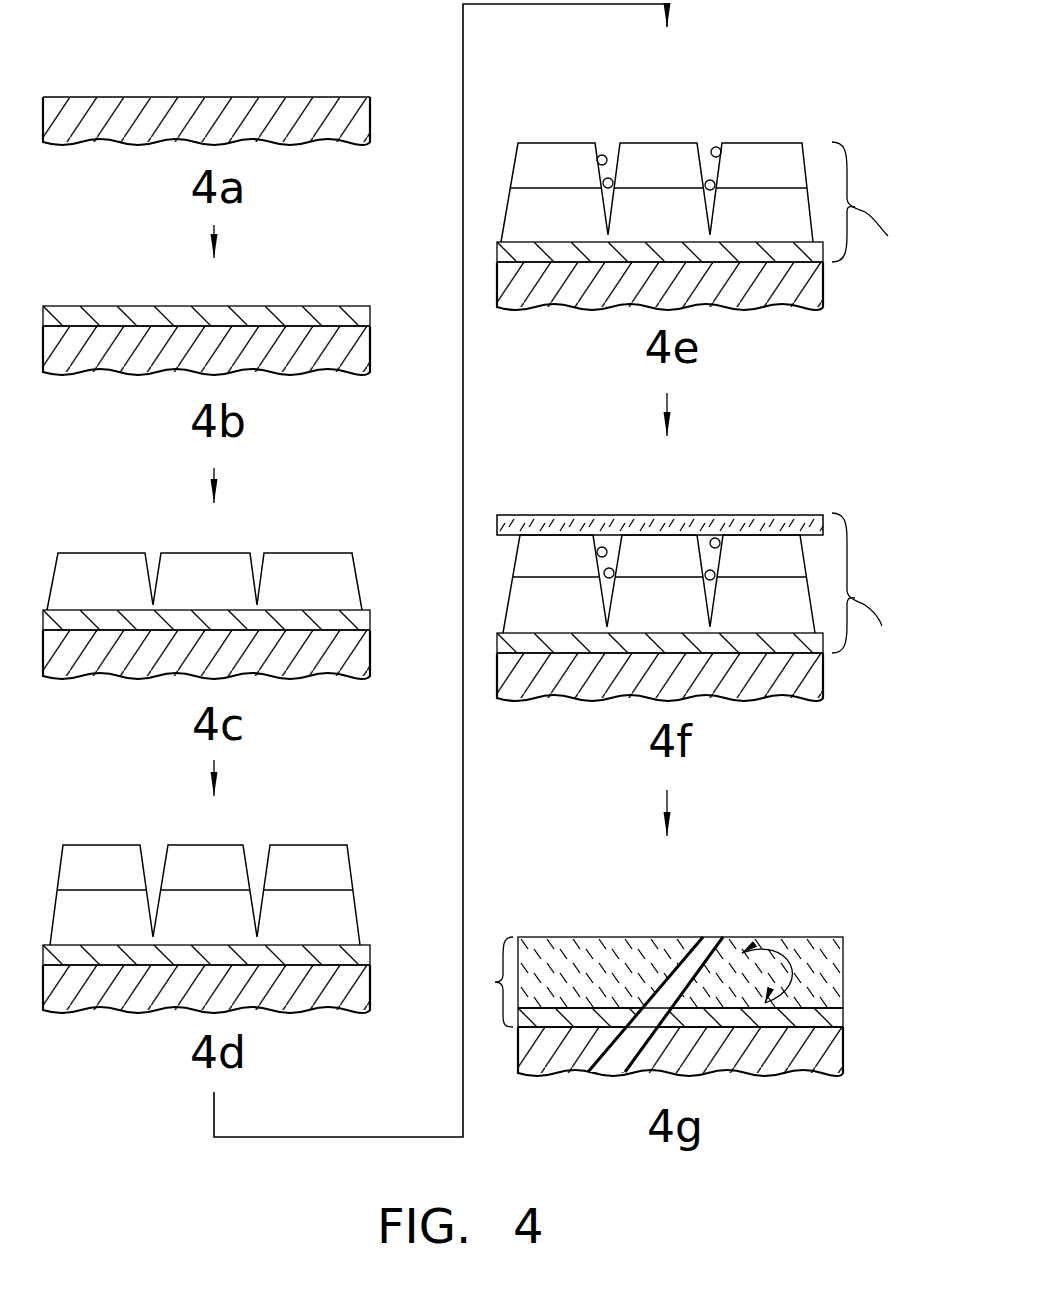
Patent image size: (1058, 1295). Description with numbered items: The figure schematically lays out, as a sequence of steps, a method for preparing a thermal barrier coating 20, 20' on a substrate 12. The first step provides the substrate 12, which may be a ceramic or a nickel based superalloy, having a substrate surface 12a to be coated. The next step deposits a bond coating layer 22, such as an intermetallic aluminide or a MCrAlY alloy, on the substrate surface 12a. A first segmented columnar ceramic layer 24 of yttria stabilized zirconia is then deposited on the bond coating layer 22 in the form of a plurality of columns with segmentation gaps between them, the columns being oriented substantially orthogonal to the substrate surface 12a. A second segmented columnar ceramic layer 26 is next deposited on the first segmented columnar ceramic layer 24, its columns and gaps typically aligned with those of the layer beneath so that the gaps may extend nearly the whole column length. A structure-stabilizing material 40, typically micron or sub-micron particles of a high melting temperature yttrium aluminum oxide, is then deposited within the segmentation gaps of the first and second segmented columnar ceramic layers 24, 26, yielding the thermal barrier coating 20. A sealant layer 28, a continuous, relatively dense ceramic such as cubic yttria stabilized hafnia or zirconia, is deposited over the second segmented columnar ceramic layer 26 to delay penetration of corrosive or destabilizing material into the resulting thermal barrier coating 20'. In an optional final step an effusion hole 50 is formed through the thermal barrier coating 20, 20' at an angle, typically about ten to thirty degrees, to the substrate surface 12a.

The substrate 12 is at (107, 135).
The substrate surface 12a is at (348, 98).
The bond coating layer 22 is at (365, 316).
The first segmented columnar ceramic layer 24 is at (378, 580).
The second segmented columnar ceramic layer 26 is at (375, 862).
The structure-stabilizing material 40 is at (709, 122).
The thermal barrier coating 20 is at (700, 584).
The sealant layer 28 is at (777, 517).
The thermal barrier coating 20' is at (876, 583).
The effusion hole 50 is at (728, 932).